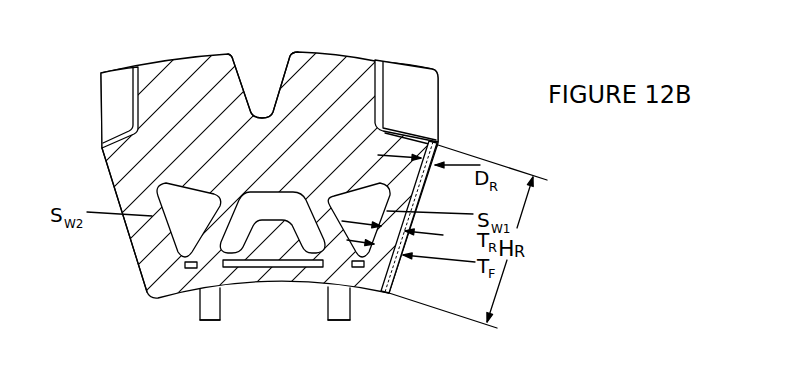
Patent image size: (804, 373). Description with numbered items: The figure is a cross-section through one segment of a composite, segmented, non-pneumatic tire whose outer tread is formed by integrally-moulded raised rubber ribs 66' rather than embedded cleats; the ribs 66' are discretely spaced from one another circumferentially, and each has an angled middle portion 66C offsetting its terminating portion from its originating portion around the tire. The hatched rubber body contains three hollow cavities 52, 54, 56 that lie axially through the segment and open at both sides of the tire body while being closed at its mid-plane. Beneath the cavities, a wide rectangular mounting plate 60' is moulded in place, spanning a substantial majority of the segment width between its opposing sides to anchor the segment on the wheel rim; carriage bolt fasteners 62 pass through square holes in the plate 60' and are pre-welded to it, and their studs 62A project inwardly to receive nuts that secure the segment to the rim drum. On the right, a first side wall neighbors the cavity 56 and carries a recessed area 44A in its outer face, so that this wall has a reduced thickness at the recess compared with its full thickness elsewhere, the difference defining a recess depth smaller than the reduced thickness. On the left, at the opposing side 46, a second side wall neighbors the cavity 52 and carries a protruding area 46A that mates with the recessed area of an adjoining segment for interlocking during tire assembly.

The second side of the tire segment 46 is at (136, 262).
The protruding area 46A is at (127, 230).
The recessed area 44A is at (393, 270).
The raised rubber ribs 66' is at (244, 63).
The angled middle portion of rib 66C is at (125, 83).
The cavity 52 is at (165, 200).
The cavity 56 is at (377, 197).
The cavity 54 is at (281, 211).
The mounting plate 60' is at (274, 292).
The carriage bolt fasteners 62 is at (198, 311).
The fastener studs 62A is at (213, 318).